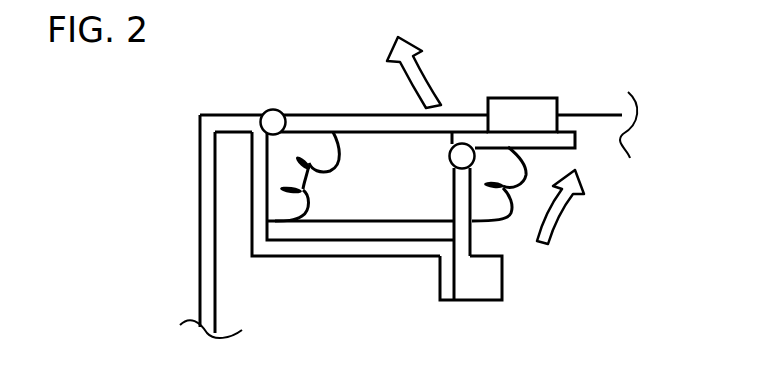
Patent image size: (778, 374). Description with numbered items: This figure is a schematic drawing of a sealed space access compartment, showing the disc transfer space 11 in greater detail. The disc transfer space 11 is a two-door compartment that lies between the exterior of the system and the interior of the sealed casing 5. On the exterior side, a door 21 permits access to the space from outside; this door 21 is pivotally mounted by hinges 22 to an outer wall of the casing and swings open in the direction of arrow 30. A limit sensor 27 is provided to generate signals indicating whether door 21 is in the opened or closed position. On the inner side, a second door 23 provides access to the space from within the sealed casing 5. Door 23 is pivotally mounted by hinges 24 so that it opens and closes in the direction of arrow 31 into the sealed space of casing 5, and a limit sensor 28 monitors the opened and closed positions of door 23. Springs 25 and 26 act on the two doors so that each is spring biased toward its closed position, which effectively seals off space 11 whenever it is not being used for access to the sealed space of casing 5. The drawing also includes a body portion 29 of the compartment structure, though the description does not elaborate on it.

The sealed casing 5 is at (593, 115).
The disc transfer space 11 is at (166, 237).
The door 21 is at (325, 114).
The hinges 22 is at (265, 112).
The door 23 is at (470, 239).
The hinges 24 is at (449, 155).
The spring 25 is at (308, 207).
The spring 26 is at (511, 212).
The limit sensor 27 is at (517, 107).
The limit sensor 28 is at (502, 280).
The base plate 29 is at (408, 256).
The arrow 30 is at (422, 85).
The arrow 31 is at (582, 182).